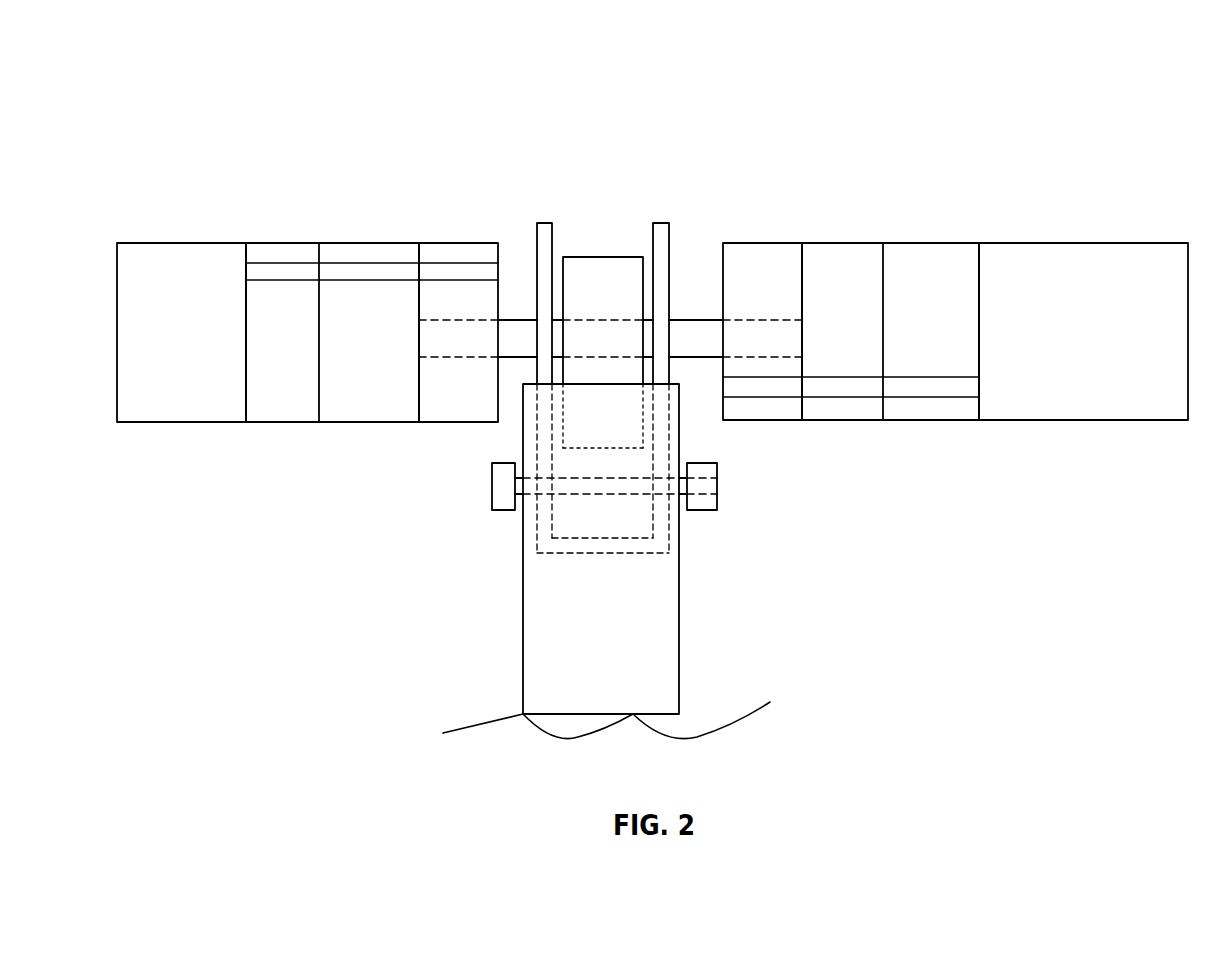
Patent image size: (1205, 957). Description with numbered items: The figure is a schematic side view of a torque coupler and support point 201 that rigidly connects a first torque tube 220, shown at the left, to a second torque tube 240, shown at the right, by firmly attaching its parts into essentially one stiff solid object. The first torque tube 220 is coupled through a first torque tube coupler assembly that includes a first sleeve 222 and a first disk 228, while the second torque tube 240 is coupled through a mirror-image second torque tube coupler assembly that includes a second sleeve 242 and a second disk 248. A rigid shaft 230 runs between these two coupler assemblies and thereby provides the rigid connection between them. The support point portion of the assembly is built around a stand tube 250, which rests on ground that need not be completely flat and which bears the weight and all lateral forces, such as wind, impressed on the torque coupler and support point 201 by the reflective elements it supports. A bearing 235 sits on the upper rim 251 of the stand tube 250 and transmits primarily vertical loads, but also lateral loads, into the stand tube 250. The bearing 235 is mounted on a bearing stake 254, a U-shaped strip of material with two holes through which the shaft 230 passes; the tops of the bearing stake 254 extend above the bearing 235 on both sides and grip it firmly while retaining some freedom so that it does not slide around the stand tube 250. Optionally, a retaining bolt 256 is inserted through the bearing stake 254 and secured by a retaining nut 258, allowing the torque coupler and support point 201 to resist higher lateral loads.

The torque coupler and support point 201 is at (167, 100).
The first torque tube 220 is at (178, 243).
The first sleeve 222 is at (370, 243).
The first disk 228 is at (460, 423).
The shaft 230 is at (523, 318).
The bearing 235 is at (634, 257).
The second torque tube 240 is at (1067, 243).
The second sleeve 242 is at (842, 243).
The second disk 248 is at (763, 420).
The stand tube 250 is at (523, 653).
The upper rim 251 is at (618, 383).
The bearing stake 254 is at (613, 553).
The retaining bolt 256 is at (492, 500).
The retaining nut 258 is at (717, 500).